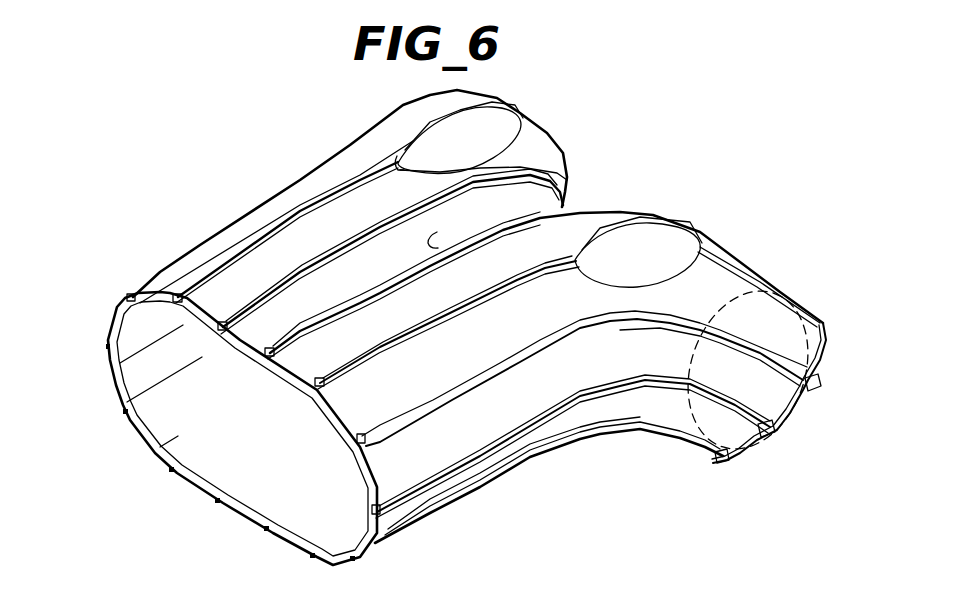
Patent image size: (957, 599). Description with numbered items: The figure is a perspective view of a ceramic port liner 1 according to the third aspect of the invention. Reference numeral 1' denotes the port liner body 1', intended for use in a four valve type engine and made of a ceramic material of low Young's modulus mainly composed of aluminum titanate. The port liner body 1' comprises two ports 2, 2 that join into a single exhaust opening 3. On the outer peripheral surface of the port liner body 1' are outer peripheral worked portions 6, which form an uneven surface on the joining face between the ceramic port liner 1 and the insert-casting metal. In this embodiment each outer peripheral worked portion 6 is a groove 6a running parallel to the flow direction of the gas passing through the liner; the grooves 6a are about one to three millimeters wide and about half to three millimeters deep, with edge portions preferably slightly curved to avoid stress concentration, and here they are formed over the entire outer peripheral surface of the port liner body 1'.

The tubular body 1 is at (475, 316).
The port liner body 1' is at (215, 428).
The port 2 is at (565, 163).
The exhaust opening 3 is at (247, 455).
The outer peripheral worked portion 6 is at (258, 228).
The groove 6a is at (253, 303).